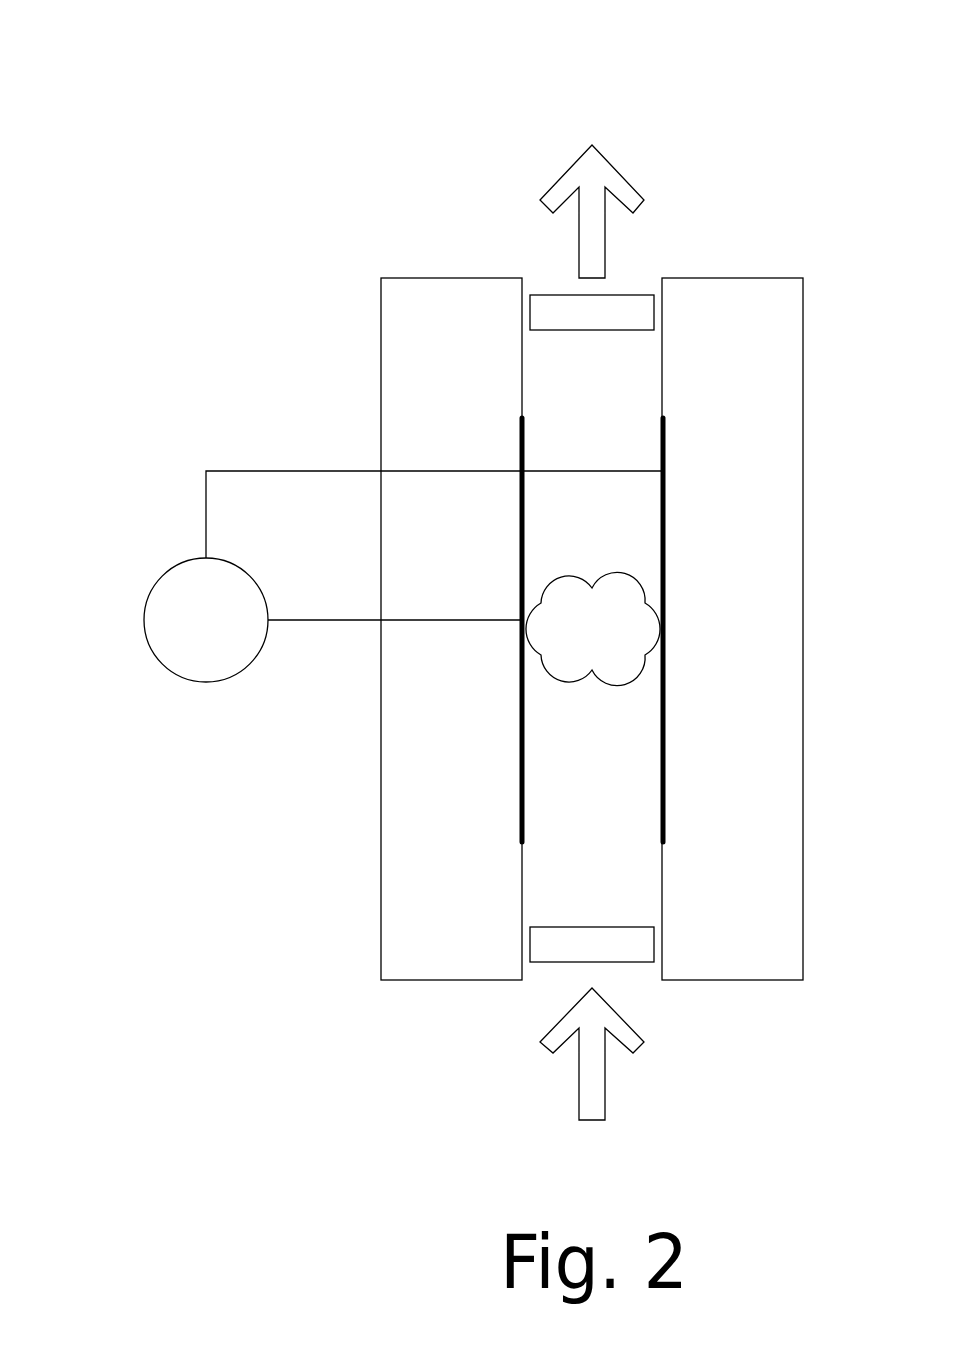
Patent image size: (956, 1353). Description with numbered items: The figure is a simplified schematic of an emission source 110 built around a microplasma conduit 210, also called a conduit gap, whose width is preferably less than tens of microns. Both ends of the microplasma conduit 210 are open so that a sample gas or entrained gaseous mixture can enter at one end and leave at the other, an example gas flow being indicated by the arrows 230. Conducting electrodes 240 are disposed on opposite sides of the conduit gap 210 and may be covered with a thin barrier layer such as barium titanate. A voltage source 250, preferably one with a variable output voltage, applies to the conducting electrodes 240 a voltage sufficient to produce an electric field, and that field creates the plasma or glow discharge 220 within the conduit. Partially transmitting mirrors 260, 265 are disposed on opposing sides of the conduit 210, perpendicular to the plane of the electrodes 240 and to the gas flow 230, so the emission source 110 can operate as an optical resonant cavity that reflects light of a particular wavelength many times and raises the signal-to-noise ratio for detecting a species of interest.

The emission source 110 is at (229, 92).
The microplasma conduit 210 is at (580, 865).
The plasma 220 is at (593, 628).
The gas flow 230 is at (592, 632).
The conducting electrodes 240 is at (640, 413).
The voltage source 250 is at (403, 576).
The partially transmitting mirror 260 is at (592, 312).
The partially transmitting mirror 265 is at (592, 944).